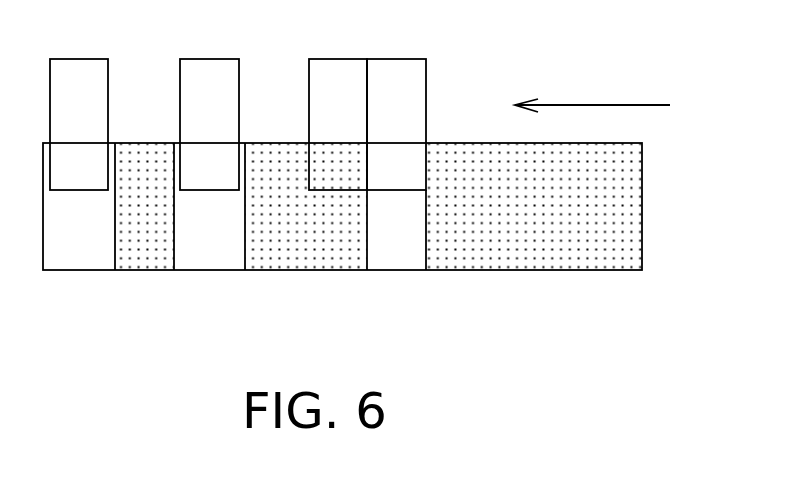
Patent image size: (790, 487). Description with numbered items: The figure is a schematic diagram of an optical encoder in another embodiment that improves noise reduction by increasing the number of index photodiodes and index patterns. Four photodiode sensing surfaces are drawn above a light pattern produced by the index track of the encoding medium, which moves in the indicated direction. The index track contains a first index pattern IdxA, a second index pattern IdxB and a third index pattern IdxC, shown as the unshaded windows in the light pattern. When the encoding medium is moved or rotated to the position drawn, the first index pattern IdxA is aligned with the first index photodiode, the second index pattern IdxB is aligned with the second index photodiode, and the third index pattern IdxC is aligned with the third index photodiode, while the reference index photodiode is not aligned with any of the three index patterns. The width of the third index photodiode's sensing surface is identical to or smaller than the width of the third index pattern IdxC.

The first index pattern IdxA is at (397, 245).
The second index pattern IdxB is at (210, 245).
The third index pattern IdxC is at (81, 245).